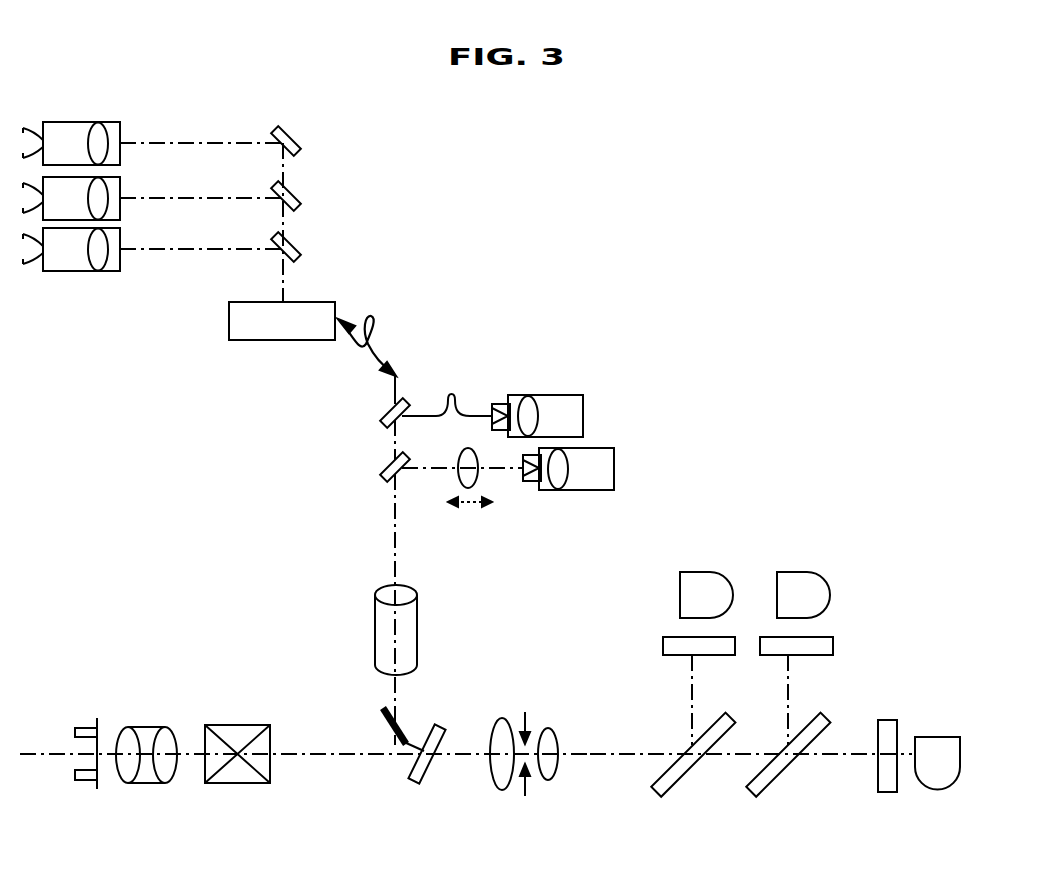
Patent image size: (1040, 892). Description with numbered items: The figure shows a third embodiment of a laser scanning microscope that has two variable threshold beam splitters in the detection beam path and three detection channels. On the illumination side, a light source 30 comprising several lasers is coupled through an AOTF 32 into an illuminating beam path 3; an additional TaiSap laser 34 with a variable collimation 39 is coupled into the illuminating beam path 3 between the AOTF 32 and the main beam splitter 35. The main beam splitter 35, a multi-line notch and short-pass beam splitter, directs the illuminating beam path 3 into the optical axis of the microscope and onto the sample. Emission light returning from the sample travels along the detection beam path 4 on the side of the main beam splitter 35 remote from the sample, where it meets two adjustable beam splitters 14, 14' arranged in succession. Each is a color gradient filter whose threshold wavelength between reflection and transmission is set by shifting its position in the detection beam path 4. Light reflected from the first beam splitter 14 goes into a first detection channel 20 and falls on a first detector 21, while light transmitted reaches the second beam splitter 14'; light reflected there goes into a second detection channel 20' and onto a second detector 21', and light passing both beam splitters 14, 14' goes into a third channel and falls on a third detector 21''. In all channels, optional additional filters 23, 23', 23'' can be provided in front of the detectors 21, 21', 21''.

The light source 30 is at (90, 326).
The AOTF 32 is at (322, 310).
The TaiSap laser 34 is at (610, 462).
The variable collimation 39 is at (478, 480).
The illuminating beam path 3 is at (395, 552).
The main beam splitter 35 is at (438, 730).
The detection beam path 4 is at (598, 758).
The first adjustable beam splitter 14 is at (697, 771).
The second adjustable beam splitter 14' is at (795, 771).
The first detection channel 20 is at (651, 700).
The second detection channel 20' is at (834, 700).
The additional filter 23 is at (671, 622).
The additional filter 23' is at (828, 622).
The additional filter 23'' is at (911, 727).
The first detector 21 is at (689, 572).
The second detector 21' is at (828, 572).
The third detector 21'' is at (972, 742).